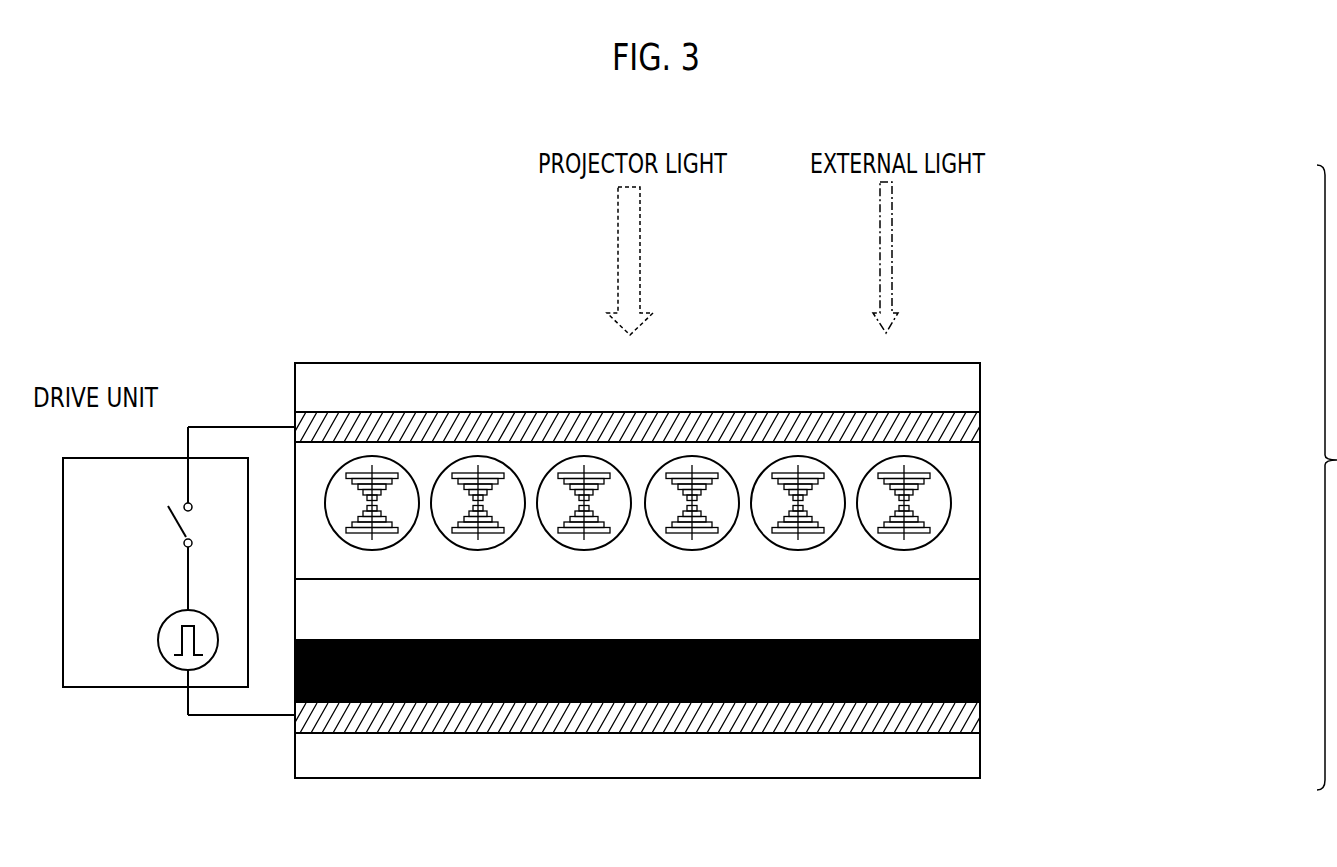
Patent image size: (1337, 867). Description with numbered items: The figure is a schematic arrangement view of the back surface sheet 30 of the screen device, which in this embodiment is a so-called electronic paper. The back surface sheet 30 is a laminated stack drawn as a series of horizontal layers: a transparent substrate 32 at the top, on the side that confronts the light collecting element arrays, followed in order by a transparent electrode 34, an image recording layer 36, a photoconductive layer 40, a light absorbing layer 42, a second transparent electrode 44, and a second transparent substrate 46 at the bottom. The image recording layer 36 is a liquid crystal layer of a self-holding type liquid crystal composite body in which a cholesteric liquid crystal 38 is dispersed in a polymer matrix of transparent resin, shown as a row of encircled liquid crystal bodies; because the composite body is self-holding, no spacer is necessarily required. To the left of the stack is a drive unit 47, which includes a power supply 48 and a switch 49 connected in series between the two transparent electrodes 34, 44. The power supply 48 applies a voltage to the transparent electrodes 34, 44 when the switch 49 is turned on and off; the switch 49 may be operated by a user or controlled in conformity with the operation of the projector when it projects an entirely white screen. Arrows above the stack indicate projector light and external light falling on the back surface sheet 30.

The back surface sheet 30 is at (942, 317).
The transparent substrate 32 is at (980, 385).
The transparent electrode 34 is at (980, 428).
The image recording layer 36 is at (980, 478).
The cholesteric liquid crystal 38 is at (980, 511).
The photoconductive layer 40 is at (980, 606).
The light absorbing layer 42 is at (980, 665).
The transparent electrode 44 is at (980, 718).
The transparent substrate 46 is at (980, 758).
The drive unit 47 is at (157, 457).
The power supply 48 is at (158, 640).
The switch 49 is at (156, 511).